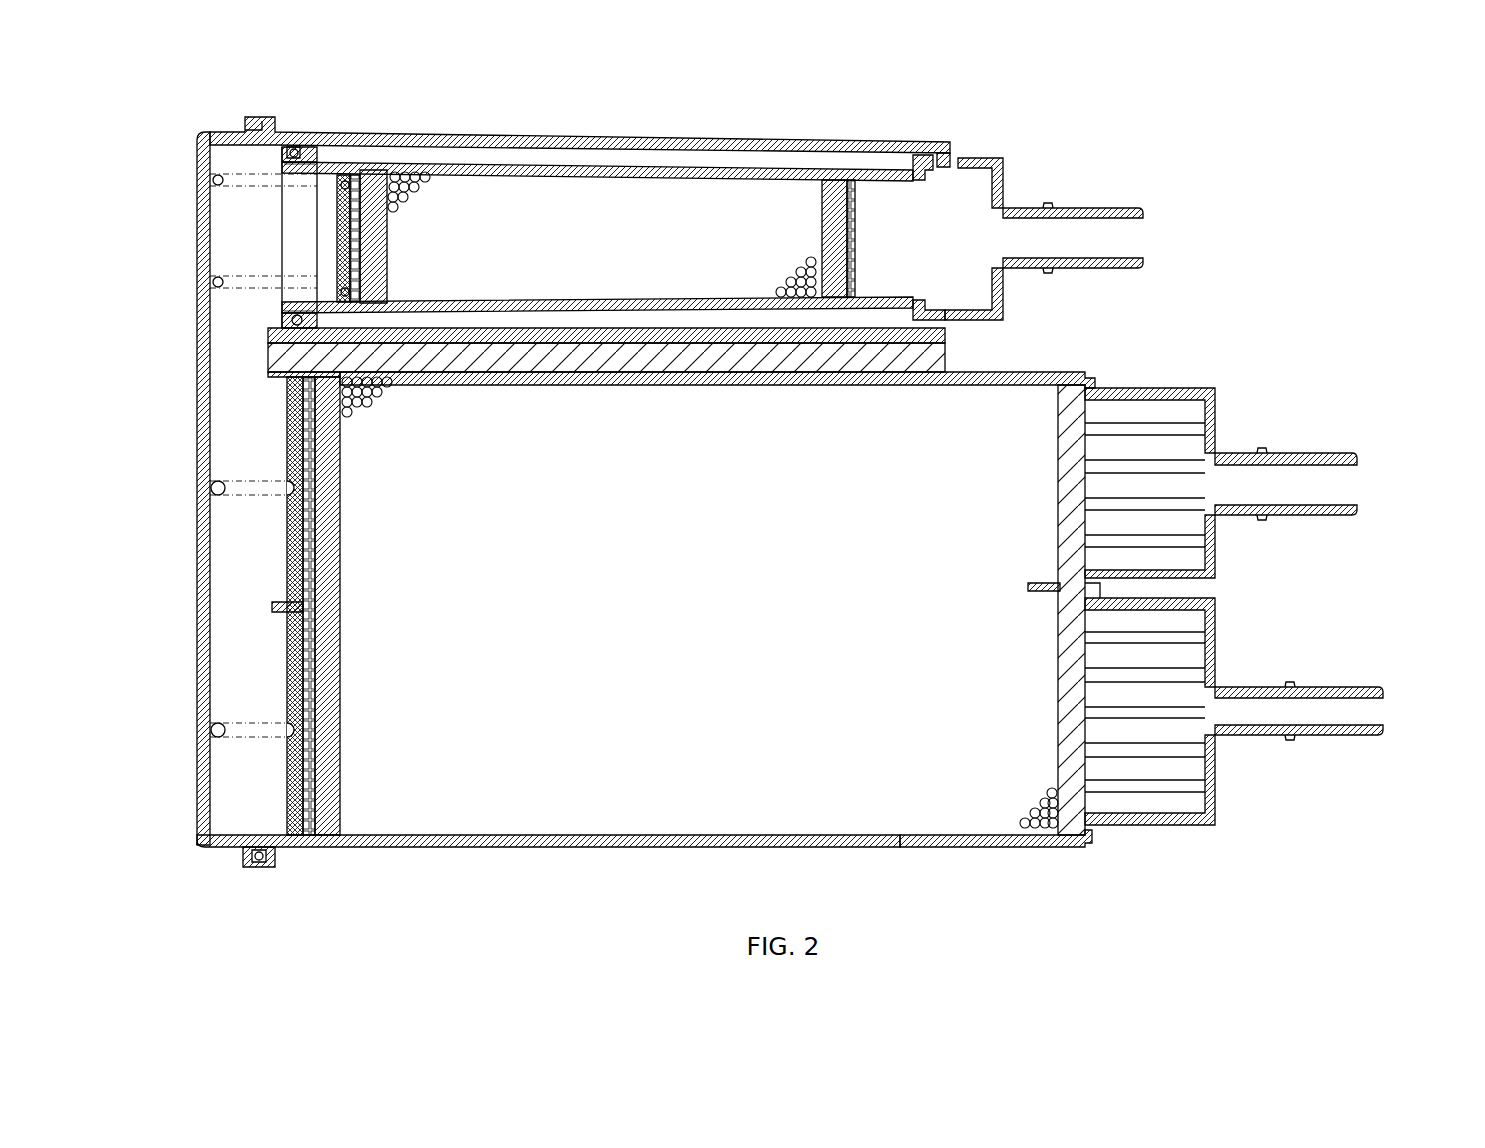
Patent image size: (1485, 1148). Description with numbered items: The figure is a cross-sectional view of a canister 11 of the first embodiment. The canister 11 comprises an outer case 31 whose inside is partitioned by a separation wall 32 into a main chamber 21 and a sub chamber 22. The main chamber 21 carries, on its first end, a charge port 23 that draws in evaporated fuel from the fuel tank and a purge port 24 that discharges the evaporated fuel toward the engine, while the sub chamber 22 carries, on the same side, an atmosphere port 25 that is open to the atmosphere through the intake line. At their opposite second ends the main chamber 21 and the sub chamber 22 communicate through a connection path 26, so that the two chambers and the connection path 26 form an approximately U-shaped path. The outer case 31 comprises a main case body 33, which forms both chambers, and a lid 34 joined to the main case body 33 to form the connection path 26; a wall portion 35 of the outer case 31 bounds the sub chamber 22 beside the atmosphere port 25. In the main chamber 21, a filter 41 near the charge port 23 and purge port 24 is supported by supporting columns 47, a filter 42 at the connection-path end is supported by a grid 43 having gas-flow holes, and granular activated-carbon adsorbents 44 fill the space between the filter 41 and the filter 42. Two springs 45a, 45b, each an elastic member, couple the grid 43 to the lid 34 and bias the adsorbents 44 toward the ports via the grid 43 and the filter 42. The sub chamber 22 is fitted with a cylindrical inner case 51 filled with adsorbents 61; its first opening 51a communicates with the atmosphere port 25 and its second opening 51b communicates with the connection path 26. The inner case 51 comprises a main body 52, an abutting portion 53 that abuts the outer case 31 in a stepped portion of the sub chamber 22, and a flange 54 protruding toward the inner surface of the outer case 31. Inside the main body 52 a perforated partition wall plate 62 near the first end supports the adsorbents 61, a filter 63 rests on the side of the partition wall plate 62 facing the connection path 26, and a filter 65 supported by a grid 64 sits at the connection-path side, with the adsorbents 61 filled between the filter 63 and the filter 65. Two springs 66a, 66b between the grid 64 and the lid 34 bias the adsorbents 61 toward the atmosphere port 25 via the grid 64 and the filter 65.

The canister 11 is at (1210, 88).
The main chamber 21 is at (658, 760).
The sub chamber 22 is at (668, 212).
The charge port 23 is at (1384, 712).
The purge port 24 is at (1358, 482).
The atmosphere port 25 is at (1146, 240).
The connection path 26 is at (232, 410).
The outer case 31 is at (940, 848).
The separation wall 32 is at (940, 357).
The main case body 33 is at (500, 849).
The lid 34 is at (225, 848).
The top wall 35 is at (928, 188).
The filter 41 is at (1070, 800).
The filter 42 is at (330, 800).
The grid 43 is at (297, 800).
The adsorbents 44 is at (352, 398).
The spring 45a is at (236, 503).
The spring 45b is at (236, 740).
The supporting columns 47 is at (1145, 430).
The inner case 51 is at (582, 162).
The first opening 51a is at (895, 255).
The second opening 51b is at (298, 240).
The main body 52 is at (500, 163).
The abutting portion 53 is at (930, 152).
The flange 54 is at (310, 150).
The adsorbents 61 is at (412, 160).
The partition wall plate 62 is at (858, 190).
The filter 63 is at (832, 210).
The grid 64 is at (352, 160).
The filter 65 is at (372, 160).
The spring 66a is at (228, 185).
The spring 66b is at (228, 284).